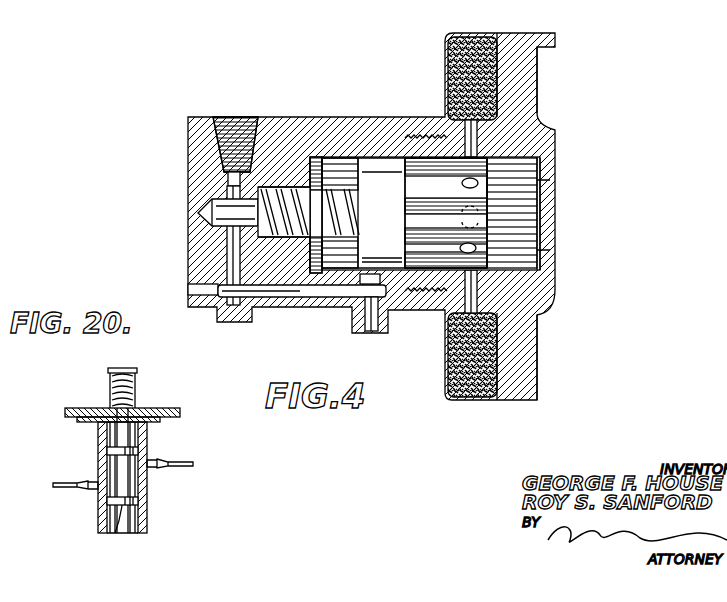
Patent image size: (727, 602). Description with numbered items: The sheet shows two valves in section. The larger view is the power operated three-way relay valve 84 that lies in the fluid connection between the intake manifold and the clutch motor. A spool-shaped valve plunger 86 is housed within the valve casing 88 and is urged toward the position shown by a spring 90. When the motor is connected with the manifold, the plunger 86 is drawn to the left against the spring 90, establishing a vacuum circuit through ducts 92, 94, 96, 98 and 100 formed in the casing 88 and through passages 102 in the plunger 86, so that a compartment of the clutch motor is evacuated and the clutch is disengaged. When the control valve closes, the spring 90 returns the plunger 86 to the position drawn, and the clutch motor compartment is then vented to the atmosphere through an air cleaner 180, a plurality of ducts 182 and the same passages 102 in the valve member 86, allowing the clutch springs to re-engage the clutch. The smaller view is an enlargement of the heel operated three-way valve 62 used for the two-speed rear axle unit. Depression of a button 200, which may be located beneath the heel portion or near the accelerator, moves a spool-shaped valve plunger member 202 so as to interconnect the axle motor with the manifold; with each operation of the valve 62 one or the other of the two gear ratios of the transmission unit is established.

In FIG. 4, the power operated three-way relay valve 84 is at (188, 146).
In FIG. 4, the spool-shaped valve plunger 86 is at (438, 202).
In FIG. 4, the valve casing 88 is at (300, 143).
In FIG. 4, the spring 90 is at (327, 192).
In FIG. 4, the duct 92 is at (232, 178).
In FIG. 4, the duct 94 is at (222, 215).
In FIG. 4, the duct 96 is at (235, 260).
In FIG. 4, the duct 98 is at (297, 296).
In FIG. 4, the duct 100 is at (356, 297).
In FIG. 4, the passages 102 is at (520, 180).
In FIG. 4, the air cleaner 180 is at (450, 63).
In FIG. 4, the ducts 182 is at (468, 145).
In FIG. 20, the heel operated three-way valve 62 is at (135, 405).
In FIG. 20, the button 200 is at (133, 370).
In FIG. 20, the spool-shaped valve plunger member 202 is at (102, 530).